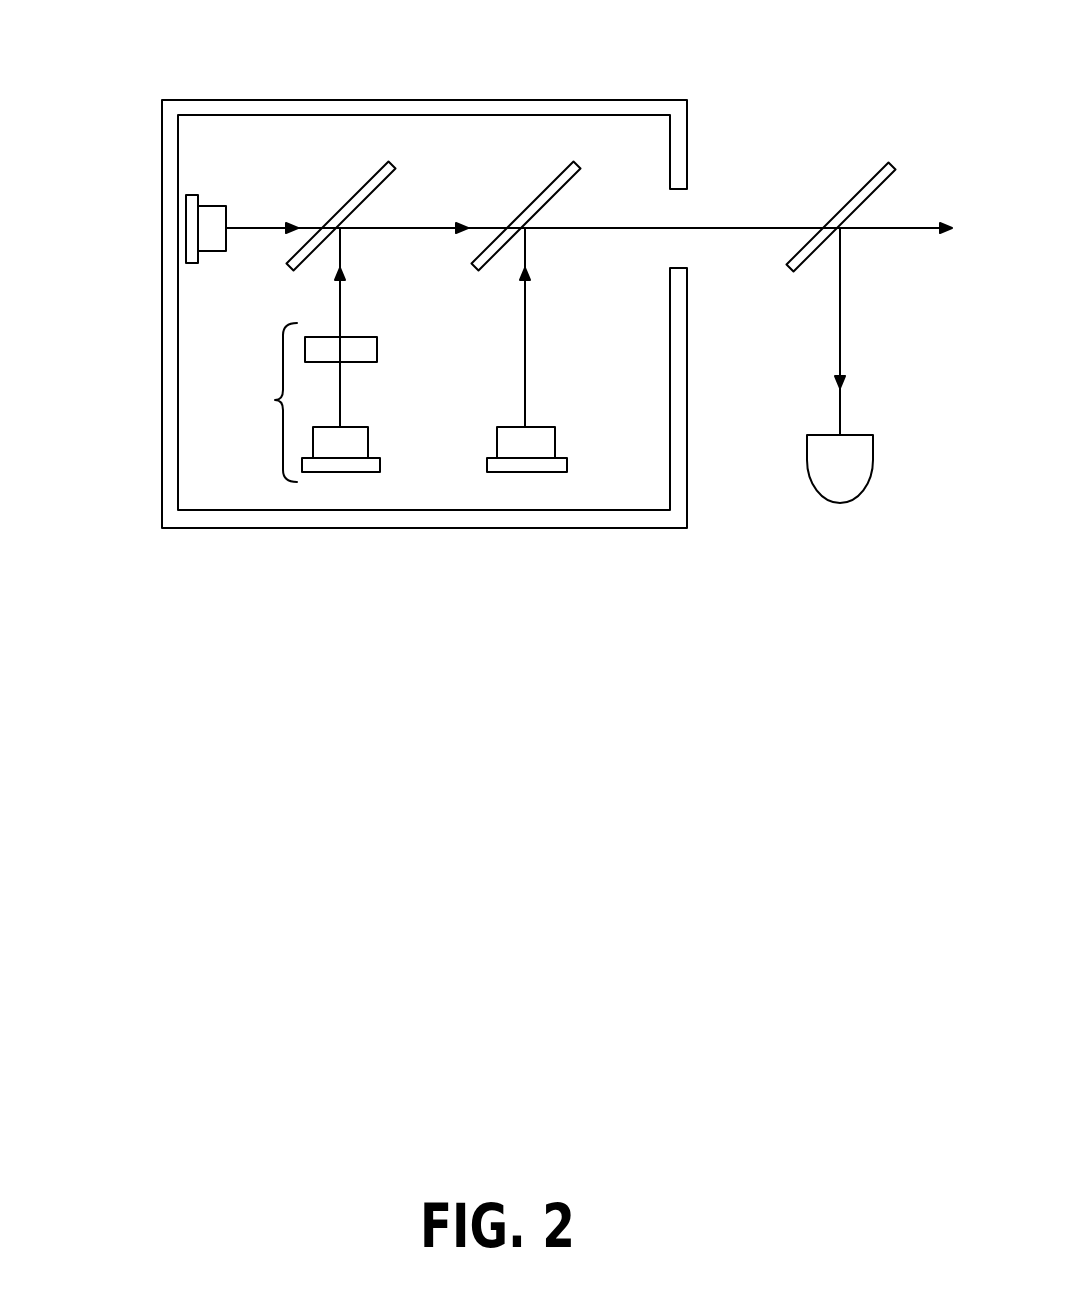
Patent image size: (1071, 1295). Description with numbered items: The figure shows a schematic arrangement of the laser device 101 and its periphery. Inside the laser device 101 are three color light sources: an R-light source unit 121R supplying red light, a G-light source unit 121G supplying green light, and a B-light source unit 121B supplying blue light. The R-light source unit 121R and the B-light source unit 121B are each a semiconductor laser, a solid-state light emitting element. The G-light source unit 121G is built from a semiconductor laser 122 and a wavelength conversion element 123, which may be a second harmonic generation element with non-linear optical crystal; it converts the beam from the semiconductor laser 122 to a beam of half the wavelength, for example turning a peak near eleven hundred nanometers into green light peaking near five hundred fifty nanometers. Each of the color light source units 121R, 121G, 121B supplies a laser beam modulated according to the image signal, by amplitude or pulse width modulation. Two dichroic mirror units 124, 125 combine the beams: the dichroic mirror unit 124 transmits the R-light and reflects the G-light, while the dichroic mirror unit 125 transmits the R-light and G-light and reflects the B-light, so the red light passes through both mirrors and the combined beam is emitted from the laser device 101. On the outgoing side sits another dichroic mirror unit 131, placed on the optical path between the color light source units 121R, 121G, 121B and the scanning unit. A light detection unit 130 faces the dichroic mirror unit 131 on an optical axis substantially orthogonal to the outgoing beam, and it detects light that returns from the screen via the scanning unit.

The laser device 101 is at (637, 105).
The R-light source unit 121R is at (200, 229).
The G-light source unit 121G is at (275, 400).
The B-light source unit 121B is at (550, 465).
The semiconductor laser 122 is at (325, 450).
The wavelength conversion element 123 is at (370, 348).
The dichroic mirror unit 124 is at (380, 168).
The dichroic mirror unit 125 is at (568, 165).
The light detection unit 130 is at (826, 493).
The dichroic mirror unit 131 is at (887, 162).